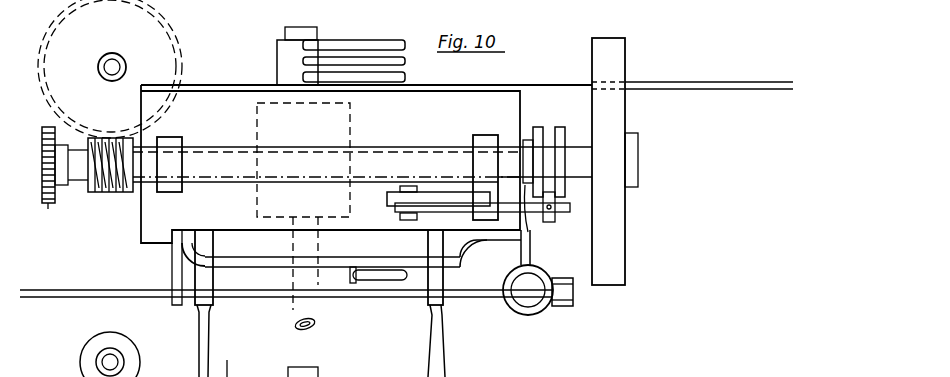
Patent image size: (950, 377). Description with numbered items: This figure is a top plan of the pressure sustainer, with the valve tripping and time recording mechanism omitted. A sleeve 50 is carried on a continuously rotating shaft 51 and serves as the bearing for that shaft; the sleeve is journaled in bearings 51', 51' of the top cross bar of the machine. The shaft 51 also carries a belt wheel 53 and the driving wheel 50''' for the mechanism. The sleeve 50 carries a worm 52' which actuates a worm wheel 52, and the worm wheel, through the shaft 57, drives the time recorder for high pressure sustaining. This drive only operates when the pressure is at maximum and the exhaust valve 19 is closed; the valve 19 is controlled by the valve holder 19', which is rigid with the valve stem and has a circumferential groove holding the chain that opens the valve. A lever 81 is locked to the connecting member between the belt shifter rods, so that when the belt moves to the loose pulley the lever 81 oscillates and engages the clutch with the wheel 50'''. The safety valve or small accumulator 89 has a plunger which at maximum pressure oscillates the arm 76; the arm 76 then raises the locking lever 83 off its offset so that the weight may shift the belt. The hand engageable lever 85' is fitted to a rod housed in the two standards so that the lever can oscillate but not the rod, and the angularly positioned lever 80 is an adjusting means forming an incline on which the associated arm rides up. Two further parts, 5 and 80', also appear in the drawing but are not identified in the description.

The frame 5 is at (272, 358).
The exhaust valve 19 is at (318, 216).
The valve holder 19' is at (341, 49).
The sleeve 50 is at (366, 195).
The driving wheel 50''' is at (692, 161).
The shaft 51 is at (330, 149).
The bearings 51' is at (361, 163).
The worm wheel 52 is at (131, 69).
The worm 52' is at (110, 177).
The belt wheel 53 is at (59, 179).
The shaft 57 is at (116, 62).
The arm 76 is at (378, 298).
The adjusting means 80 is at (367, 280).
The link 80' is at (547, 222).
The lever 81 is at (432, 192).
The locking lever 83 is at (445, 350).
The hand engageable lever 85' is at (227, 303).
The safety valve 89 is at (535, 308).